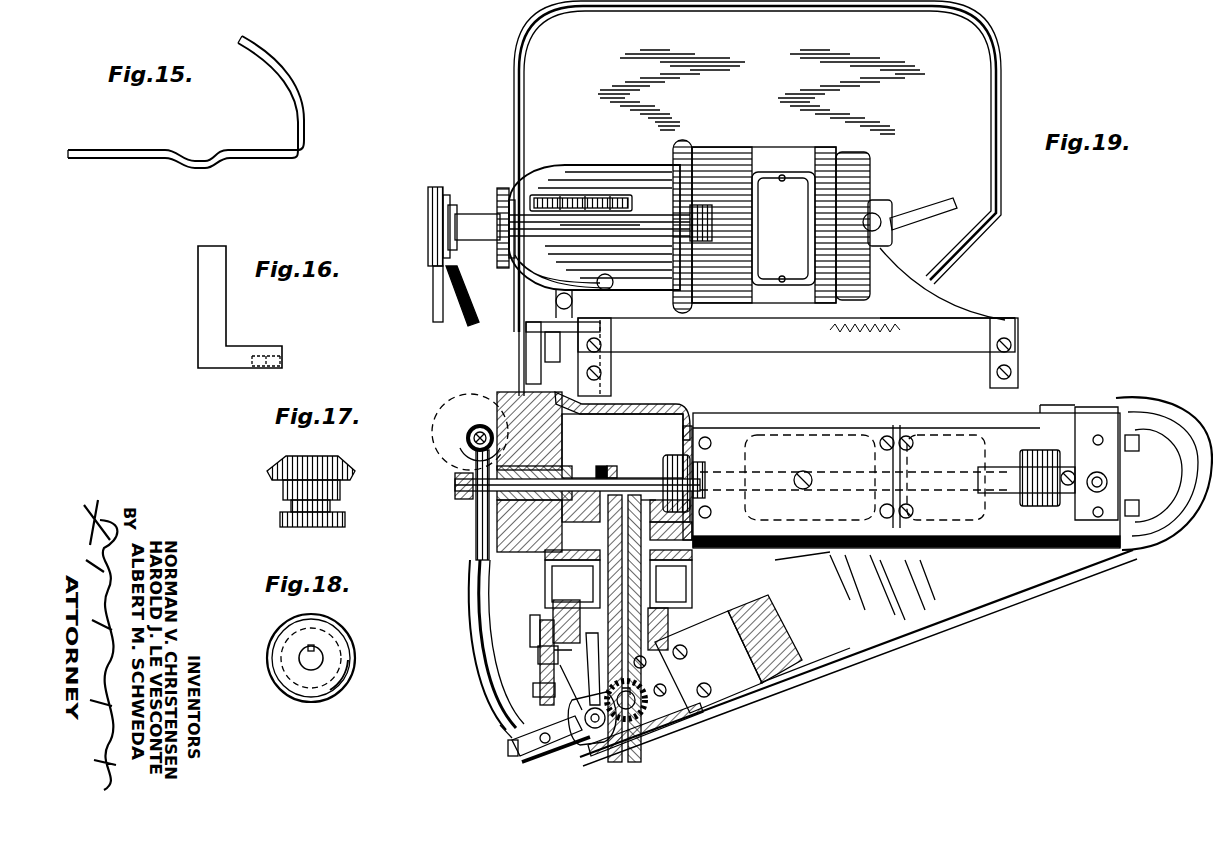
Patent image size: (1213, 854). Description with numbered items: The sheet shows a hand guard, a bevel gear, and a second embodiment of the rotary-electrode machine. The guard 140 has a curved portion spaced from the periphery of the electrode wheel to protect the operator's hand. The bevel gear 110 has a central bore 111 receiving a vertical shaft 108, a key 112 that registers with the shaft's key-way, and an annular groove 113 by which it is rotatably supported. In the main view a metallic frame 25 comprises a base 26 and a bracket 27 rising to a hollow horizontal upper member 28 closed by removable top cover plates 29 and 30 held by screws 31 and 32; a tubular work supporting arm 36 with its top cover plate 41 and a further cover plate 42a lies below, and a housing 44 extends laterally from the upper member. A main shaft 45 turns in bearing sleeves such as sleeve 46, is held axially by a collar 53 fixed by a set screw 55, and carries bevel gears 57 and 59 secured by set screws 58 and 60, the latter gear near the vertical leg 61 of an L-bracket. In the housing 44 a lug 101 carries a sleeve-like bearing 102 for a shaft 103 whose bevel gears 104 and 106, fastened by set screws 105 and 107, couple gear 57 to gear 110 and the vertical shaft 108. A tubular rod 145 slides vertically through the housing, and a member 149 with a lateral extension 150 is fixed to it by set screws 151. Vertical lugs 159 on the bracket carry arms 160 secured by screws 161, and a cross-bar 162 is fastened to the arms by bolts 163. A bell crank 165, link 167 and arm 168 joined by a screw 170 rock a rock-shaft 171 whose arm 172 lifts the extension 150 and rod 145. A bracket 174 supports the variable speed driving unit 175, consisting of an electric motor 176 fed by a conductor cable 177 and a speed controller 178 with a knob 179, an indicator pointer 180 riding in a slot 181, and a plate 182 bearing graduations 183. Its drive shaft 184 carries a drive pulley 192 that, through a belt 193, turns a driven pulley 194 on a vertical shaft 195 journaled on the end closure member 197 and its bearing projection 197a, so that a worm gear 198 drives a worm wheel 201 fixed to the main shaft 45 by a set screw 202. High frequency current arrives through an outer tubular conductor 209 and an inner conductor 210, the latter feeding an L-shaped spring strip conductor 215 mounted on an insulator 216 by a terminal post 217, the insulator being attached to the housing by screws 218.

In FIG. 19, the metallic frame 25 is at (983, 250).
In FIG. 19, the base 26 is at (548, 70).
In FIG. 19, the bracket 27 is at (960, 305).
In FIG. 19, the hollow horizontal upper member 28 is at (1112, 552).
In FIG. 19, the top cover plate 29 is at (722, 440).
In FIG. 19, the top cover plate 30 is at (903, 436).
In FIG. 19, the screw 31 is at (884, 438).
In FIG. 19, the screw 32 is at (908, 500).
In FIG. 19, the work supporting arm 36 is at (797, 688).
In FIG. 19, the top cover plate 41 is at (842, 630).
In FIG. 19, the bracket extension 42a is at (760, 650).
In FIG. 19, the housing 44 is at (640, 745).
In FIG. 19, the main shaft 45 is at (643, 482).
In FIG. 19, the bearing sleeve 46 is at (566, 486).
In FIG. 19, the collar 53 is at (672, 456).
In FIG. 19, the set screw 55 is at (702, 476).
In FIG. 19, the bevel gear 57 is at (612, 466).
In FIG. 19, the set screw 58 is at (601, 466).
In FIG. 19, the bevel gear 59 is at (1070, 548).
In FIG. 19, the set screw 60 is at (1072, 460).
In FIG. 19, the vertical leg 61 is at (1040, 510).
In FIG. 19, the lug 101 is at (730, 620).
In FIG. 19, the sleeve-like extension 102 is at (686, 524).
In FIG. 19, the shaft 103 is at (622, 528).
In FIG. 19, the bevel gear 104 is at (612, 508).
In FIG. 19, the set screw 105 is at (647, 508).
In FIG. 19, the bevel gear 106 is at (660, 630).
In FIG. 19, the set screw 107 is at (672, 670).
In FIG. 19, the vertical shaft 108 is at (664, 690).
In FIG. 17, the bevel gear 110 is at (268, 475).
In FIG. 18, the bevel gear 110 is at (352, 635).
In FIG. 19, the bevel gear 110 is at (646, 728).
In FIG. 18, the central bore 111 is at (306, 662).
In FIG. 18, the key 112 is at (306, 648).
In FIG. 19, the key 112 is at (630, 720).
In FIG. 17, the annular groove 113 is at (290, 507).
In FIG. 18, the annular groove 113 is at (352, 682).
In FIG. 15, the guard 140 is at (262, 160).
In FIG. 16, the guard 140 is at (198, 315).
In FIG. 19, the tubular rod 145 is at (560, 704).
In FIG. 19, the member 149 is at (578, 758).
In FIG. 19, the lateral extension 150 is at (598, 645).
In FIG. 19, the set screws 151 is at (610, 757).
In FIG. 19, the vertical lugs 159 is at (601, 373).
In FIG. 19, the laterally projecting arm 160 is at (580, 385).
In FIG. 19, the screw 161 is at (600, 378).
In FIG. 19, the cross-bar 162 is at (792, 350).
In FIG. 19, the screw or bolt 163 is at (1026, 318).
In FIG. 19, the bell crank 165 is at (520, 312).
In FIG. 19, the link 167 is at (526, 360).
In FIG. 19, the arm 168 is at (540, 660).
In FIG. 19, the screw 170 is at (534, 646).
In FIG. 19, the rock-shaft 171 is at (580, 636).
In FIG. 19, the arm 172 is at (544, 684).
In FIG. 19, the bracket 174 is at (574, 308).
In FIG. 19, the variable speed driving unit 175 is at (711, 143).
In FIG. 19, the electric motor 176 is at (778, 160).
In FIG. 19, the conductor cable 177 is at (918, 200).
In FIG. 19, the speed controller 178 is at (632, 165).
In FIG. 19, the rotatable knob 179 is at (704, 212).
In FIG. 19, the indicator pointer 180 is at (590, 228).
In FIG. 19, the slot 181 is at (632, 225).
In FIG. 19, the plate 182 is at (556, 194).
In FIG. 19, the graduations 183 is at (598, 194).
In FIG. 19, the drive shaft 184 is at (472, 218).
In FIG. 19, the drive pulley 192 is at (428, 212).
In FIG. 19, the belt 193 is at (433, 302).
In FIG. 19, the driven pulley 194 is at (458, 400).
In FIG. 19, the vertical shaft 195 is at (482, 425).
In FIG. 19, the end closure member 197 is at (556, 444).
In FIG. 19, the housing boss 197a is at (468, 447).
In FIG. 19, the worm gear 198 is at (466, 436).
In FIG. 19, the worm wheel 201 is at (476, 522).
In FIG. 19, the set screw 202 is at (452, 496).
In FIG. 19, the outer tubular conductor 209 is at (472, 668).
In FIG. 19, the inner conductor 210 is at (500, 724).
In FIG. 19, the spring strip conductor 215 is at (516, 754).
In FIG. 19, the insulator 216 is at (530, 766).
In FIG. 19, the terminal post 217 is at (508, 748).
In FIG. 19, the screws 218 is at (552, 738).